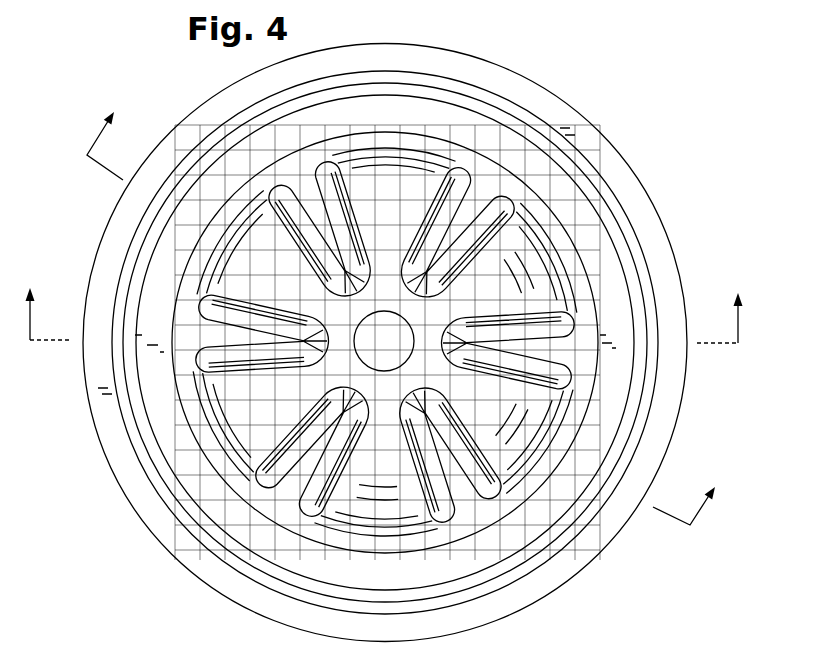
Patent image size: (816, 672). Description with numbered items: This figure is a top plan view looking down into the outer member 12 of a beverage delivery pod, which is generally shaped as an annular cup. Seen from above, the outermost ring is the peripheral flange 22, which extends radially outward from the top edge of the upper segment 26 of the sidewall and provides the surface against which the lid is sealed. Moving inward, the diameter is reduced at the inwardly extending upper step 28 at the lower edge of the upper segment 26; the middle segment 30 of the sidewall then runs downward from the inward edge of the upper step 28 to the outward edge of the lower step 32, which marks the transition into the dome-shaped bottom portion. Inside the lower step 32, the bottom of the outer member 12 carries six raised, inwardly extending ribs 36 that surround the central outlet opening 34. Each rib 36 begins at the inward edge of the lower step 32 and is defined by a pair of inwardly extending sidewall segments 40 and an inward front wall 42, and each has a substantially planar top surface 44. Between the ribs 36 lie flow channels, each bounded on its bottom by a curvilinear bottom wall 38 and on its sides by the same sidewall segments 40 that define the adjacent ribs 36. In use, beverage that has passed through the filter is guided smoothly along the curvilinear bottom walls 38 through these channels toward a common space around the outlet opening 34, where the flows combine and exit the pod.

The outer member 12 is at (628, 139).
The peripheral flange 22 is at (593, 142).
The upper segment 26 is at (583, 117).
The upper step 28 is at (482, 98).
The middle segment 30 is at (543, 128).
The lower step 32 is at (440, 145).
The outlet opening 34 is at (357, 373).
The ribs 36 is at (560, 455).
The curvilinear bottom wall 38 is at (505, 398).
The sidewall segments 40 is at (560, 283).
The inward front wall 42 is at (527, 308).
The top surface 44 is at (548, 365).